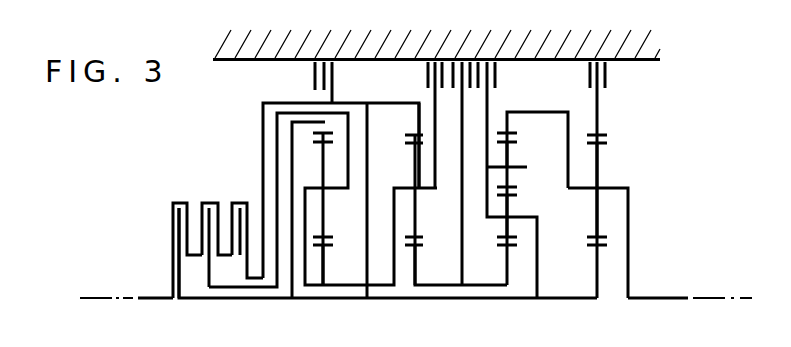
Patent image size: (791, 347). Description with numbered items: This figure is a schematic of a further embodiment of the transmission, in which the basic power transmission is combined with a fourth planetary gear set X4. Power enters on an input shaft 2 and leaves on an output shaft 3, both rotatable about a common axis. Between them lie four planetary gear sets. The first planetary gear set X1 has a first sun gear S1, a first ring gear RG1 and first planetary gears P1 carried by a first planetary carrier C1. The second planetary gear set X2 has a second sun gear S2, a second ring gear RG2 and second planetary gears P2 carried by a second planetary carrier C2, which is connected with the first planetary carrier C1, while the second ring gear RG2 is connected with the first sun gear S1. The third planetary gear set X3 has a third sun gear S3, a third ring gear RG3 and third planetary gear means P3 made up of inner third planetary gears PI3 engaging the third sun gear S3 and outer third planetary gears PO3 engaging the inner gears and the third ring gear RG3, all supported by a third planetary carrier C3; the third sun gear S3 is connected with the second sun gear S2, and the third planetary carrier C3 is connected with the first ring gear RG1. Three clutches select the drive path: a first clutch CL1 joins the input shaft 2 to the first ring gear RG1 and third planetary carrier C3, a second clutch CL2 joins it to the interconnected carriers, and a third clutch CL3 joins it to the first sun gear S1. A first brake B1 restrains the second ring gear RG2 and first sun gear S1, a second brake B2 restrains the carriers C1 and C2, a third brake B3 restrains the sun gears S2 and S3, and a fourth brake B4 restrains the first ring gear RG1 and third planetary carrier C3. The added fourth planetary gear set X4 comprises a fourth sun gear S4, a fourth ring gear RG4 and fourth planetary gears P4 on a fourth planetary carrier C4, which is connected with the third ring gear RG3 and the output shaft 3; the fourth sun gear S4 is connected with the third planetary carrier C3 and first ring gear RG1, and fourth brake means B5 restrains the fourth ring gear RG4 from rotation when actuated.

The input shaft 2 is at (158, 300).
The output shaft 3 is at (672, 300).
The first clutch CL1 is at (170, 205).
The second clutch CL2 is at (203, 204).
The third clutch CL3 is at (245, 187).
The first brake B1 is at (314, 74).
The second brake B2 is at (428, 76).
The third brake B3 is at (453, 67).
The fourth brake B4 is at (478, 65).
The fourth brake means B5 is at (607, 68).
The first ring gear RG1 is at (326, 128).
The second ring gear RG2 is at (408, 118).
The third ring gear RG3 is at (516, 118).
The fourth ring gear RG4 is at (600, 109).
The first planetary carrier C1 is at (327, 190).
The second planetary carrier C2 is at (416, 186).
The third planetary carrier C3 is at (485, 205).
The fourth planetary carrier C4 is at (615, 186).
The first planetary gears P1 is at (327, 222).
The second planetary gears P2 is at (417, 213).
The third planetary gear means P3 is at (527, 193).
The fourth planetary gears P4 is at (599, 215).
The outer third planetary gears PO3 is at (509, 153).
The inner third planetary gears PI3 is at (509, 228).
The first sun gear S1 is at (326, 262).
The second sun gear S2 is at (417, 268).
The third sun gear S3 is at (505, 263).
The fourth sun gear S4 is at (595, 258).
The first planetary gear set X1 is at (319, 271).
The second planetary gear set X2 is at (411, 280).
The third planetary gear set X3 is at (517, 270).
The fourth planetary gear set X4 is at (606, 275).